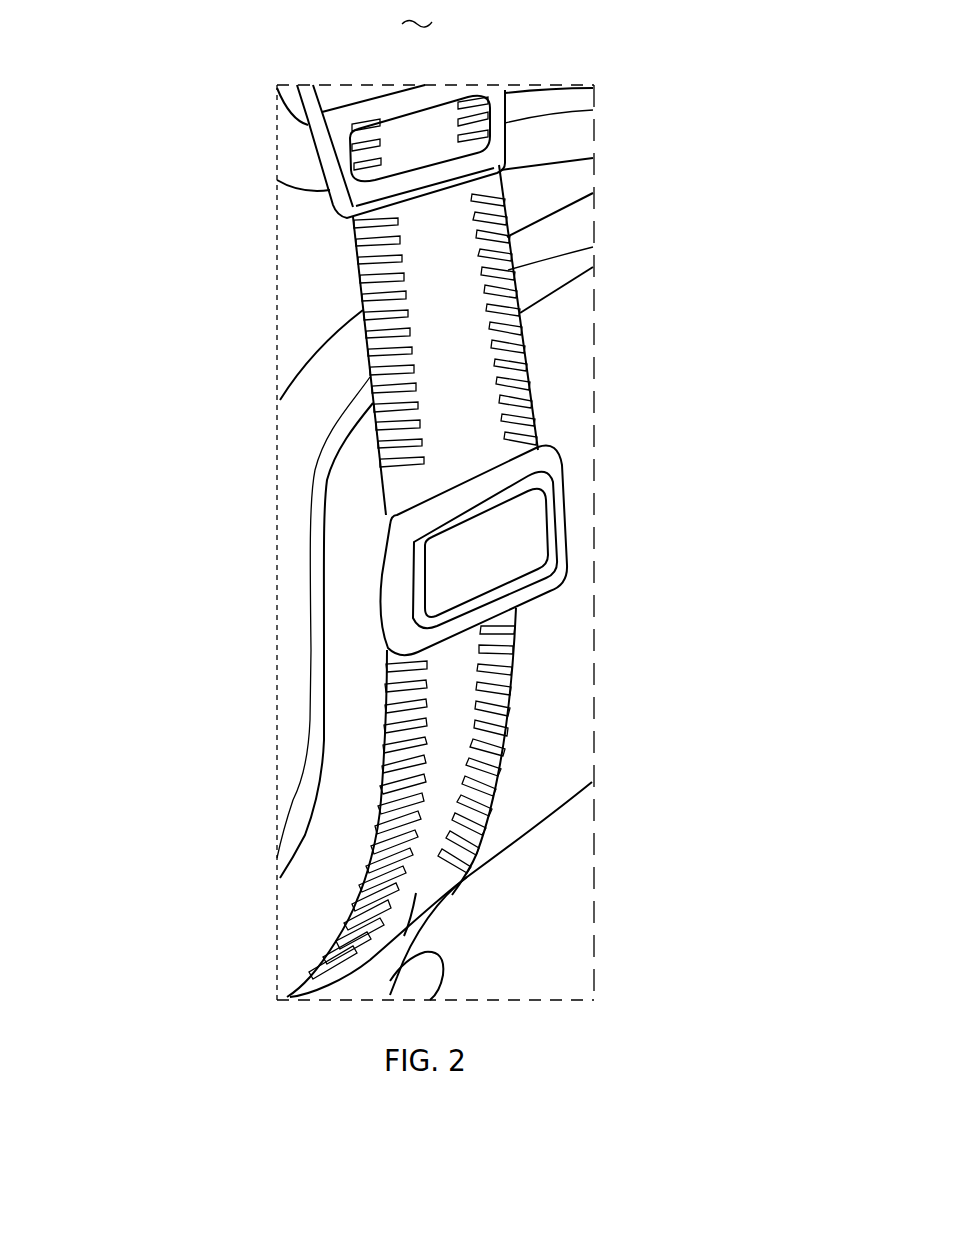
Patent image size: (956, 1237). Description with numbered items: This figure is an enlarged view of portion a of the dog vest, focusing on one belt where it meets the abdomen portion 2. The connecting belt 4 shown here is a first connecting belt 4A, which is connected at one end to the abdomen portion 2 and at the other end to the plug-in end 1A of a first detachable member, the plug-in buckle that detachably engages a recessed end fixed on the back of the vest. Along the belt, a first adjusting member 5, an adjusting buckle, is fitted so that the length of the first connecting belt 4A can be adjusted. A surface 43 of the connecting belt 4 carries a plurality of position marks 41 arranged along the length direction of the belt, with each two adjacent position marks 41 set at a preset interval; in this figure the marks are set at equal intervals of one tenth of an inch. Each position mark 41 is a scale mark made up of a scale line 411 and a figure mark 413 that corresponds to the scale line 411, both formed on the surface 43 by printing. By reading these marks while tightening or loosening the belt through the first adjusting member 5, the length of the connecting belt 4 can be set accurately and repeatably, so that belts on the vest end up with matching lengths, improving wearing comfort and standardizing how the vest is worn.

The plug-in end 1A is at (350, 180).
The abdomen portion 2 is at (555, 702).
The connecting belt 4 is at (447, 581).
The first connecting belt 4A is at (447, 581).
The position marks 41 is at (527, 586).
The scale line 411 is at (527, 367).
The figure mark 413 is at (470, 283).
The surface 43 is at (477, 393).
The first adjusting member 5 is at (572, 518).
The portion a is at (417, 13).